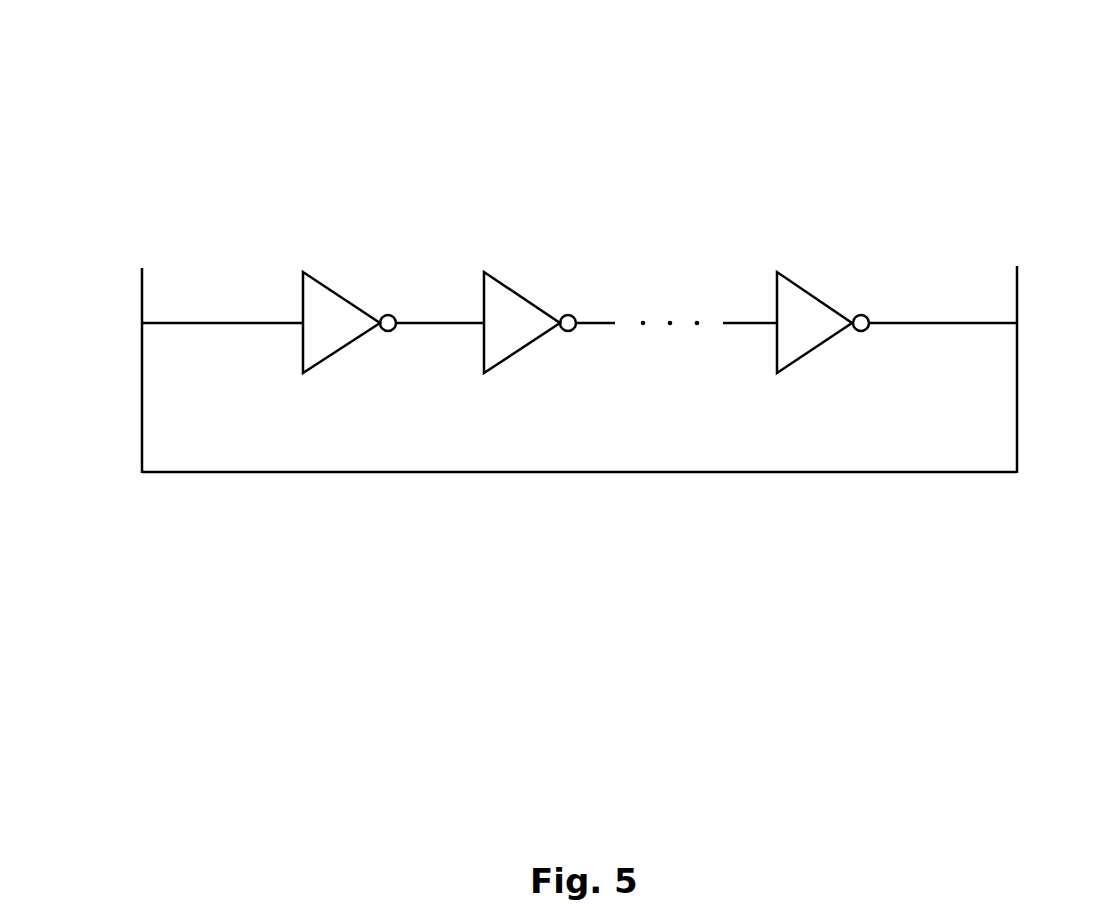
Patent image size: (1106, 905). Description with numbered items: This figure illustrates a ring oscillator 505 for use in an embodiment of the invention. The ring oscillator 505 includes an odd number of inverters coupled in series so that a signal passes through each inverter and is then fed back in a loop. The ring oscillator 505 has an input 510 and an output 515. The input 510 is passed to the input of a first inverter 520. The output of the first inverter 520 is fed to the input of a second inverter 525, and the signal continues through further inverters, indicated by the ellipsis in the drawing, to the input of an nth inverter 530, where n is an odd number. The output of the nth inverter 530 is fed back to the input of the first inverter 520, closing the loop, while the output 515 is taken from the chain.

The ring oscillator 505 is at (146, 101).
The input 510 is at (141, 330).
The output 515 is at (1009, 330).
The first inverter 520 is at (349, 334).
The second inverter 525 is at (530, 334).
The nth inverter 530 is at (822, 334).